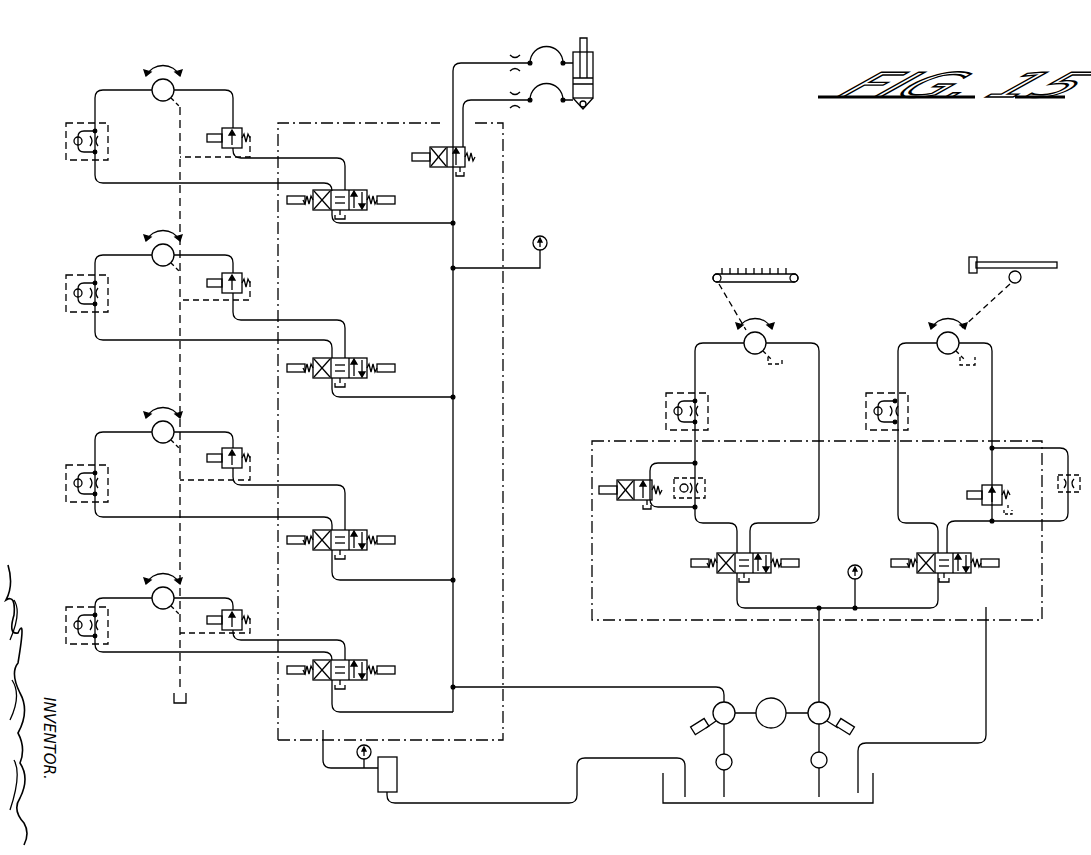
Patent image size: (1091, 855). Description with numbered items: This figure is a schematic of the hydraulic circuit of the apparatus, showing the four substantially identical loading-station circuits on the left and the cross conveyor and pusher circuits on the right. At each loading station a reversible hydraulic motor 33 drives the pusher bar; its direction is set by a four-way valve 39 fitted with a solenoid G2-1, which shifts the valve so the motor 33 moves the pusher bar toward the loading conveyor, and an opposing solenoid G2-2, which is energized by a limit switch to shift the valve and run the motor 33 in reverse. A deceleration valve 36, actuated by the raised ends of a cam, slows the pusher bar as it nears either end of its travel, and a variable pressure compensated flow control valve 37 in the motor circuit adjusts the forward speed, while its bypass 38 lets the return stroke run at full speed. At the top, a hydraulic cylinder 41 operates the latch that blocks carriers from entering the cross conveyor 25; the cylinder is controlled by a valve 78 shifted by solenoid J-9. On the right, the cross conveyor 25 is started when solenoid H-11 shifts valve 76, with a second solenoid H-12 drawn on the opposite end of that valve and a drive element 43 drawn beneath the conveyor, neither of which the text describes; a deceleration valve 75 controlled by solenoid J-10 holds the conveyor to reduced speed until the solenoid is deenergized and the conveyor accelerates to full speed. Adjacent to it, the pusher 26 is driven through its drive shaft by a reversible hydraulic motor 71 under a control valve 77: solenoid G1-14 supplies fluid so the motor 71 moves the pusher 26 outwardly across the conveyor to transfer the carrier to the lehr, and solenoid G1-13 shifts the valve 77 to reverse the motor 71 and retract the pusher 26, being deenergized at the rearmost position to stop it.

The hydraulic motor 33 is at (154, 84).
The deceleration valve 36 is at (222, 128).
The variable pressure compensated flow control valve 37 is at (70, 124).
The bypass 38 is at (77, 142).
The four-way valve 39 is at (344, 194).
The solenoid G2-1 is at (287, 201).
The solenoid G2-2 is at (387, 205).
The solenoid J-9 is at (430, 152).
The valve 78 is at (444, 167).
The hydraulic cylinder 41 is at (597, 90).
The cross conveyor 25 is at (776, 244).
The pusher 26 is at (972, 260).
The hydraulic motor 43 is at (766, 346).
The reversible hydraulic motor 71 is at (958, 346).
The solenoid J-10 is at (599, 490).
The deceleration valve 75 is at (638, 500).
The solenoid H-11 is at (691, 566).
The valve 76 is at (723, 577).
The solenoid H-12 is at (826, 556).
The solenoid G1-13 is at (891, 564).
The control valve 77 is at (965, 556).
The solenoid G1-14 is at (992, 568).